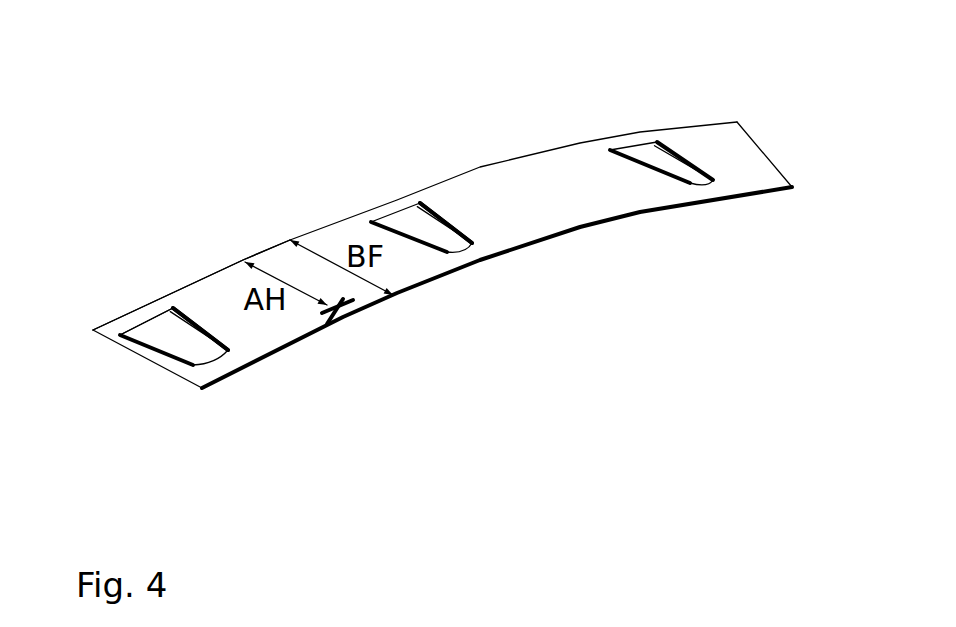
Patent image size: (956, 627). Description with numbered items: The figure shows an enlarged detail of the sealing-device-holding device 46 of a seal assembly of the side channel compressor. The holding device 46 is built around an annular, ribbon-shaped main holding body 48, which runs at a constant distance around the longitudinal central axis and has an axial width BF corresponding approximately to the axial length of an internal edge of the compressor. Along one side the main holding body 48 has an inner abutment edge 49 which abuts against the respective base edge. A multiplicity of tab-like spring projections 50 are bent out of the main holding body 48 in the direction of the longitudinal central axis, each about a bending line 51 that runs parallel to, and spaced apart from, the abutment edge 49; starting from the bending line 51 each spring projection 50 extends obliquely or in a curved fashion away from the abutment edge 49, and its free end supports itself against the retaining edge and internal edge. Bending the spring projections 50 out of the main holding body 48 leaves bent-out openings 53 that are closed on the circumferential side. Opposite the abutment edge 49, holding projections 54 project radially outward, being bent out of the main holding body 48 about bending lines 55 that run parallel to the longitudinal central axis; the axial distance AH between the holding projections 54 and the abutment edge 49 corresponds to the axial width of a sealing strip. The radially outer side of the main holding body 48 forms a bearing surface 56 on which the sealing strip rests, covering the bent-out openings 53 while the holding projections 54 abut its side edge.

The sealing-device-holding device 46 is at (348, 230).
The main holding body 48 is at (525, 180).
The inner abutment edge 49 is at (243, 258).
The spring projection 50 is at (413, 227).
The bending line 51 is at (143, 328).
The bent-out opening 53 is at (458, 230).
The holding projection 54 is at (330, 319).
The bending line 55 is at (340, 318).
The bearing surface 56 is at (590, 180).